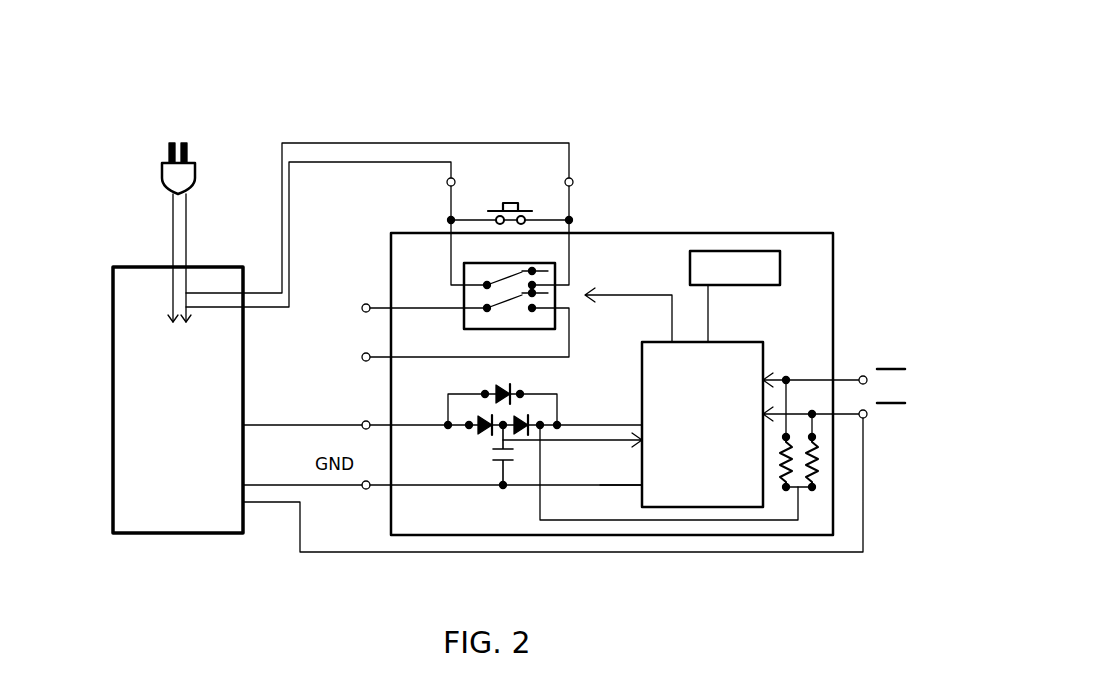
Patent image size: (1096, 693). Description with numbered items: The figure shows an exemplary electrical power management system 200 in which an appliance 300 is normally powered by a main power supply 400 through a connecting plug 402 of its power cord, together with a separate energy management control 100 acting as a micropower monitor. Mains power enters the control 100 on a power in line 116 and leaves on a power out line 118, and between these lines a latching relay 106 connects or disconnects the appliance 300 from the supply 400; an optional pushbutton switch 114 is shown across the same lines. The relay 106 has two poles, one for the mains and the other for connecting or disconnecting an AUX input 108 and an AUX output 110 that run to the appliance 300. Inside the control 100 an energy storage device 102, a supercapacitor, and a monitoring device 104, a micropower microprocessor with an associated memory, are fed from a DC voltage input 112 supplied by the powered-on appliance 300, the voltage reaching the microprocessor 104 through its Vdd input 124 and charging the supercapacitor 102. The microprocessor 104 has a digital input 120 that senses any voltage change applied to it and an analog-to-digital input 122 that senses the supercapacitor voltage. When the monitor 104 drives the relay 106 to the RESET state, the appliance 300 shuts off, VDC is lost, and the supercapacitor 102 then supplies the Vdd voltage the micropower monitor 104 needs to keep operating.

The electronic device or system 200 is at (742, 68).
The main power supply 400 is at (173, 106).
The connecting plug 402 is at (162, 178).
The appliance 300 is at (111, 300).
The control 100 is at (736, 231).
The power out line 118 is at (445, 222).
The power in line 116 is at (575, 229).
The pushbutton switch 114 is at (510, 150).
The latching relay 106 is at (570, 267).
The AUX output 110 is at (364, 296).
The AUX input 108 is at (364, 347).
The DC voltage input 112 is at (364, 412).
The energy storage device 102 is at (470, 478).
The monitoring device 104 is at (731, 336).
The Vdd input 124 is at (641, 424).
The digital input 120 is at (753, 428).
The analog-to-digital input 122 is at (650, 455).